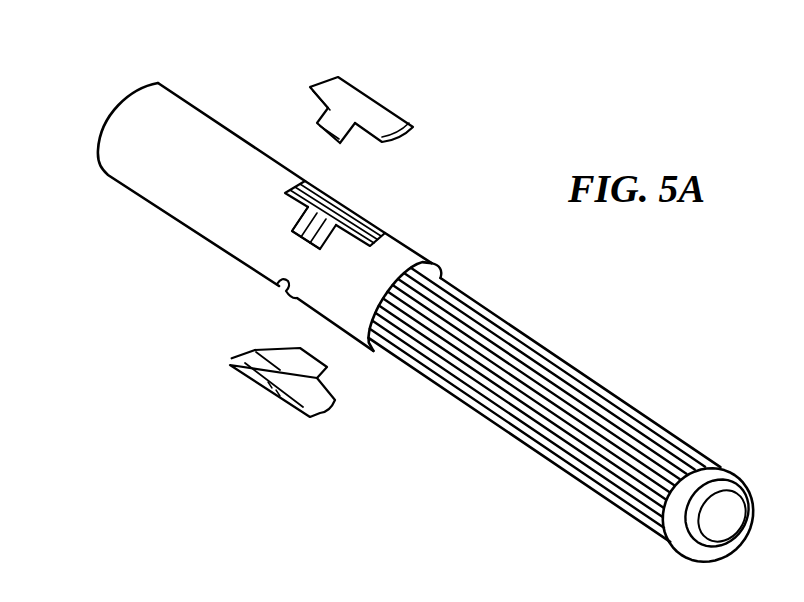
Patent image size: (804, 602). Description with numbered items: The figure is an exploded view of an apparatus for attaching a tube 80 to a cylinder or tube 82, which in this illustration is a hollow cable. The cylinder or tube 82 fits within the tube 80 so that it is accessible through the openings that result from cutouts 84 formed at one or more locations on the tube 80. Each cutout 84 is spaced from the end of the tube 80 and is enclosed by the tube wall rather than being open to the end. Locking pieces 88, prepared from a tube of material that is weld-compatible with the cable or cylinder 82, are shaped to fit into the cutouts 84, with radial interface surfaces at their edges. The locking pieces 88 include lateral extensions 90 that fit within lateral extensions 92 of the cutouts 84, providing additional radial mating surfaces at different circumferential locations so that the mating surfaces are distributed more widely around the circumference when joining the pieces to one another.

The tube 80 is at (210, 127).
The cylinder or tube 82 is at (682, 438).
The cutout 84 is at (370, 225).
The locking piece 88 is at (373, 107).
The lateral extension 90 is at (322, 117).
The lateral extension 92 is at (295, 228).